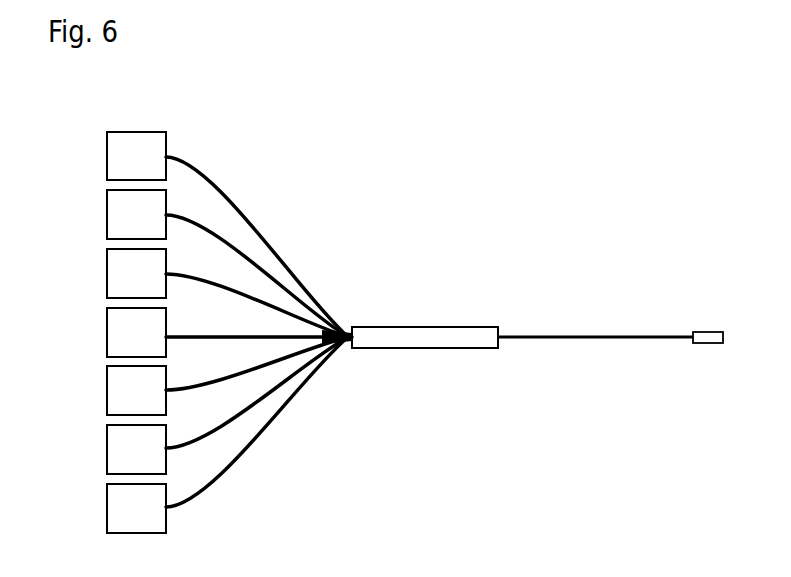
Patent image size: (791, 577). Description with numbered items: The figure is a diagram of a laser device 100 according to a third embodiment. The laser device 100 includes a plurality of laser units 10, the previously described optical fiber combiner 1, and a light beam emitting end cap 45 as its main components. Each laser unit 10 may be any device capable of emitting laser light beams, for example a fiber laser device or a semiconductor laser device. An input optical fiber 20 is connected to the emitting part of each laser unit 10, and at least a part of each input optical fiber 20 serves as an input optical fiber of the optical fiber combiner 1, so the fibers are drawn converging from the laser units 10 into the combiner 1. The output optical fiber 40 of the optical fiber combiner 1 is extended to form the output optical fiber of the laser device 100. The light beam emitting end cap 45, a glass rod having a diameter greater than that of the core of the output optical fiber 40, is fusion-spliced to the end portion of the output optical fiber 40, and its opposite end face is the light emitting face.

The laser device 100 is at (648, 121).
The laser unit 10 is at (116, 147).
The input optical fiber 20 is at (219, 185).
The optical fiber combiner 1 is at (470, 335).
The output optical fiber 40 is at (583, 335).
The light beam emitting end cap 45 is at (720, 335).